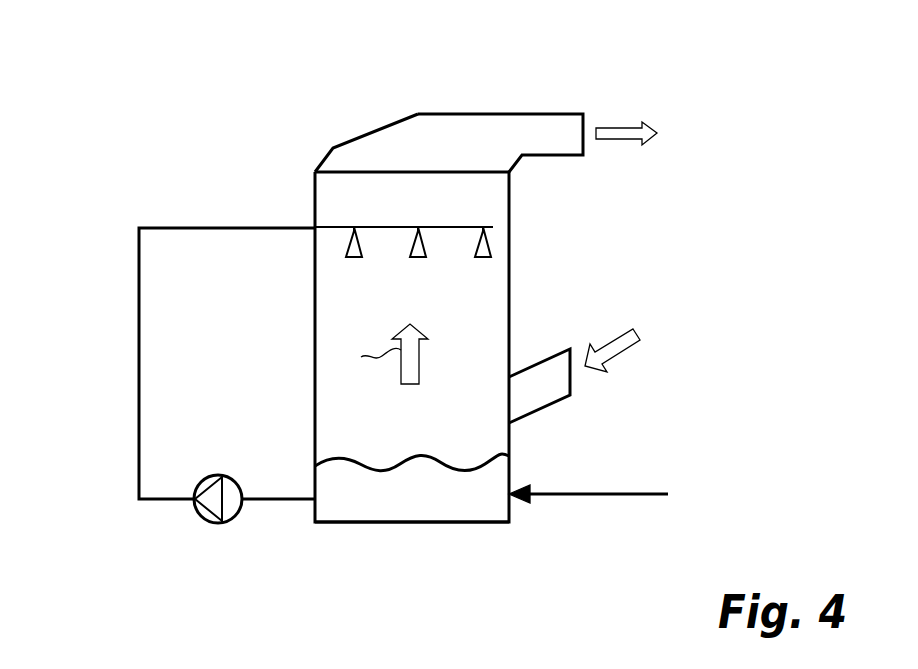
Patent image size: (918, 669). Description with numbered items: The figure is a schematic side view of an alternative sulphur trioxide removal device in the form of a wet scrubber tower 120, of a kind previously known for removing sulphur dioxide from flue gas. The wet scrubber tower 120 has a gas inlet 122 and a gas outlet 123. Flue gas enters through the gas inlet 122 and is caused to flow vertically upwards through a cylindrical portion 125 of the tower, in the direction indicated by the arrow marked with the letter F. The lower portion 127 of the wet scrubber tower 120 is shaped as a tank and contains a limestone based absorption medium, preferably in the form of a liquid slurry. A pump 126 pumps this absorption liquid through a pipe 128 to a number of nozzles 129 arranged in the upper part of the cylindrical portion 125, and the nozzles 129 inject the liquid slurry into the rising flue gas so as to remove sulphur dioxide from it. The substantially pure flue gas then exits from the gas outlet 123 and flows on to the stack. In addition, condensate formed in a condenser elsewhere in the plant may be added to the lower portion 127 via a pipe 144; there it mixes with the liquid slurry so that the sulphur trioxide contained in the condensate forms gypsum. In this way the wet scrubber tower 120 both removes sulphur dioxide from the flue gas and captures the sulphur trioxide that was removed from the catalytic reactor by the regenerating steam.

The wet scrubber tower 120 is at (218, 157).
The gas inlet 122 is at (548, 405).
The gas outlet 123 is at (557, 113).
The cylindrical portion 125 is at (315, 367).
The pump 126 is at (203, 520).
The lower portion 127 is at (410, 523).
The pipe 128 is at (139, 345).
The nozzles 129 is at (492, 244).
The pipe 144 is at (593, 495).